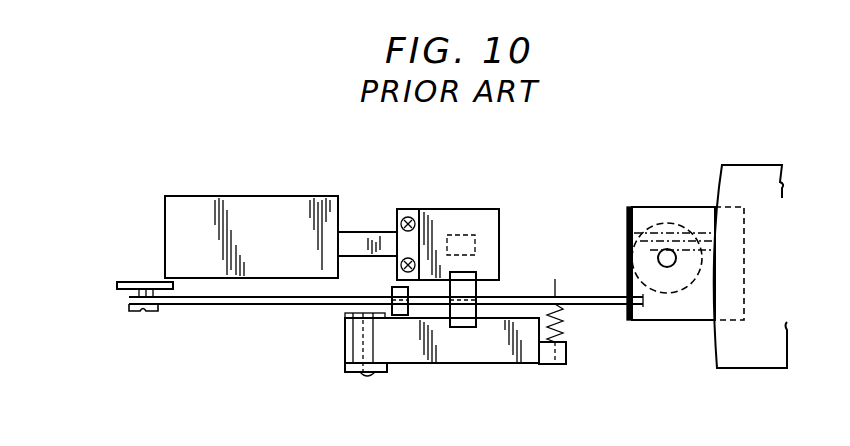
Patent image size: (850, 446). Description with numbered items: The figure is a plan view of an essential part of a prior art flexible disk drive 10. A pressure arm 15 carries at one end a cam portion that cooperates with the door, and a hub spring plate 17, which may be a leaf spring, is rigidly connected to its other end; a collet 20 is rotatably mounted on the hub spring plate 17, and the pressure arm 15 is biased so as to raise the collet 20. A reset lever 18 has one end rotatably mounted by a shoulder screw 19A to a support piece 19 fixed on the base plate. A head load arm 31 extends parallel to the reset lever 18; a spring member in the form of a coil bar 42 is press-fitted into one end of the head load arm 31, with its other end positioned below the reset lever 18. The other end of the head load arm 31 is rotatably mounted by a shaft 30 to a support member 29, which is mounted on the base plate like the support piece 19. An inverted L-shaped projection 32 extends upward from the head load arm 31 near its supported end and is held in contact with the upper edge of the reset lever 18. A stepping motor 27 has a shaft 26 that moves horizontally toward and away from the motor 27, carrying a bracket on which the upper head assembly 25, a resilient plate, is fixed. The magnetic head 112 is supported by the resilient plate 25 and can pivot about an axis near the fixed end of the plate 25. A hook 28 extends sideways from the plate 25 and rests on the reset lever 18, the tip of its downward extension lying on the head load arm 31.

The flexible disk drive 10 is at (564, 182).
The pressure arm 15 is at (768, 192).
The hub spring plate 17 is at (690, 222).
The reset lever 18 is at (263, 304).
The support piece 19 is at (115, 290).
The shoulder screw 19A is at (153, 310).
The collet 20 is at (663, 225).
The upper head assembly 25 is at (458, 217).
The shaft 26 is at (376, 238).
The stepping motor 27 is at (263, 208).
The hook 28 is at (458, 327).
The support member 29 is at (352, 373).
The shaft 30 is at (373, 375).
The head load arm 31 is at (503, 350).
The inverted L-shaped projection 32 is at (392, 296).
The coil bar 42 is at (562, 321).
The magnetic head 112 is at (475, 250).